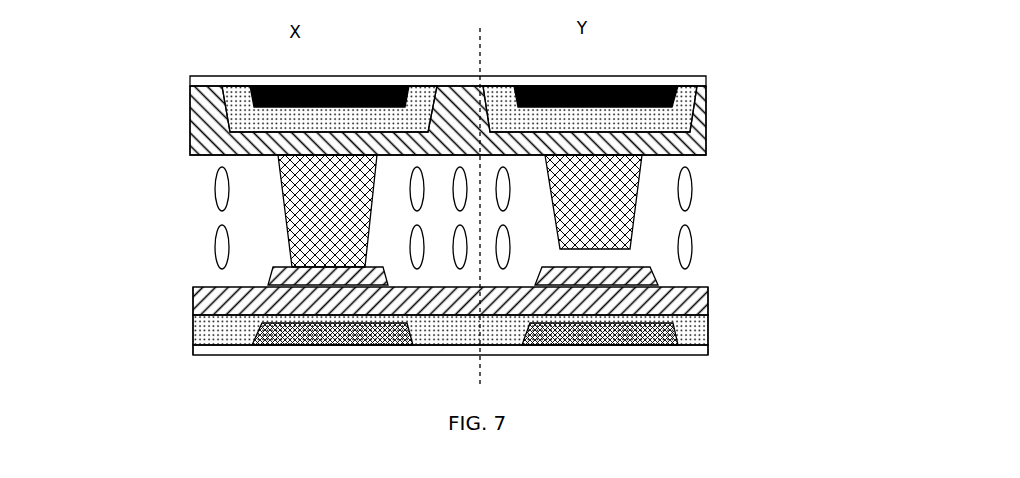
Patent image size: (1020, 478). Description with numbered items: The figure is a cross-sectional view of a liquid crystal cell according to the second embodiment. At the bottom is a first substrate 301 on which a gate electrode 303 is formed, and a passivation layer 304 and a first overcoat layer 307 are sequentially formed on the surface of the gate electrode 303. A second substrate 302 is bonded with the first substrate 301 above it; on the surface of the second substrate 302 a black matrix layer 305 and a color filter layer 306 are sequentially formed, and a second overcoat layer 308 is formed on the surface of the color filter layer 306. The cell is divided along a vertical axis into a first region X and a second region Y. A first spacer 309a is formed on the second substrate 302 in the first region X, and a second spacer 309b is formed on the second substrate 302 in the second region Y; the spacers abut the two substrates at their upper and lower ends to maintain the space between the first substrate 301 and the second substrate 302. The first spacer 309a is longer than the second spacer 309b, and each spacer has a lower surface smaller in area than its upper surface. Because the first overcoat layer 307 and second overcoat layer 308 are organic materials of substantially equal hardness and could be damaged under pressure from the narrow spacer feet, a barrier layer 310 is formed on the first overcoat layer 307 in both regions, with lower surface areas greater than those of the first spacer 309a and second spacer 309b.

The first substrate 301 is at (697, 353).
The second substrate 302 is at (676, 83).
The gate electrode 303 is at (300, 347).
The passivation layer 304 is at (213, 333).
The black matrix layer 305 is at (348, 77).
The color filter layer 306 is at (680, 118).
The first overcoat layer 307 is at (708, 305).
The second overcoat layer 308 is at (190, 144).
The first spacer 309a is at (290, 210).
The second spacer 309b is at (612, 208).
The barrier layer 310 is at (652, 275).